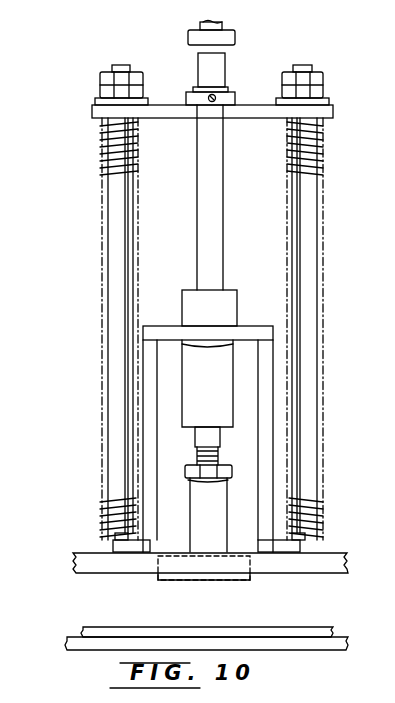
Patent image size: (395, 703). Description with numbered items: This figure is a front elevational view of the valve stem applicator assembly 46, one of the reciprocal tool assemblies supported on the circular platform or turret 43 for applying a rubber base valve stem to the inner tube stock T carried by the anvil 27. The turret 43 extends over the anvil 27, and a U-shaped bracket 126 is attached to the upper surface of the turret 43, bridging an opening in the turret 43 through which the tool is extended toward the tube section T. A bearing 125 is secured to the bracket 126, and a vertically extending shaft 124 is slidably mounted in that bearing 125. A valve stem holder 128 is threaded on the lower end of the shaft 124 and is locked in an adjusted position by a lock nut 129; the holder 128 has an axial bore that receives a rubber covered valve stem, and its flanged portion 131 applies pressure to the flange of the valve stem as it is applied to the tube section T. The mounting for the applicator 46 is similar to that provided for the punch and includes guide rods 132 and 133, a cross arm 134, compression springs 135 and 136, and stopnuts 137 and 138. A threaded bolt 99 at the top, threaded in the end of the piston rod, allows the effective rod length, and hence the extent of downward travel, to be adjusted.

The threaded bolt 99 is at (236, 38).
The cross arm 134 is at (250, 105).
The stopnut 137 is at (101, 78).
The stopnut 138 is at (322, 80).
The compression spring 135 is at (103, 150).
The compression spring 136 is at (320, 150).
The guide rod 132 is at (105, 206).
The guide rod 133 is at (306, 229).
The vertically extending shaft 124 is at (222, 200).
The bearing 125 is at (231, 299).
The U-shaped bracket 126 is at (273, 332).
The lock nut 129 is at (232, 472).
The valve stem holder 128 is at (193, 513).
The valve stem applicator assembly 46 is at (86, 291).
The turret 43 is at (130, 572).
The flanged portion 131 is at (250, 580).
The inner tube stock T is at (308, 631).
The anvil 27 is at (344, 651).